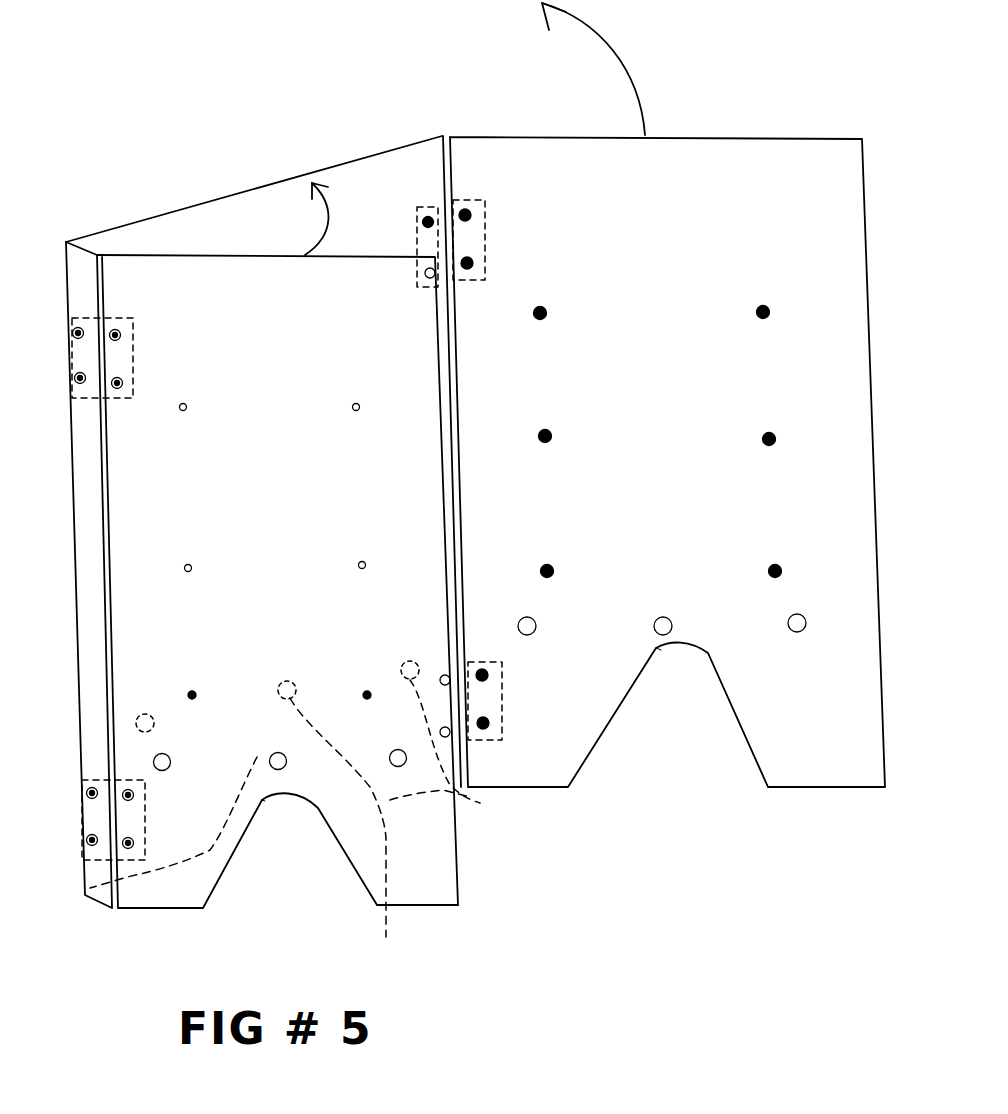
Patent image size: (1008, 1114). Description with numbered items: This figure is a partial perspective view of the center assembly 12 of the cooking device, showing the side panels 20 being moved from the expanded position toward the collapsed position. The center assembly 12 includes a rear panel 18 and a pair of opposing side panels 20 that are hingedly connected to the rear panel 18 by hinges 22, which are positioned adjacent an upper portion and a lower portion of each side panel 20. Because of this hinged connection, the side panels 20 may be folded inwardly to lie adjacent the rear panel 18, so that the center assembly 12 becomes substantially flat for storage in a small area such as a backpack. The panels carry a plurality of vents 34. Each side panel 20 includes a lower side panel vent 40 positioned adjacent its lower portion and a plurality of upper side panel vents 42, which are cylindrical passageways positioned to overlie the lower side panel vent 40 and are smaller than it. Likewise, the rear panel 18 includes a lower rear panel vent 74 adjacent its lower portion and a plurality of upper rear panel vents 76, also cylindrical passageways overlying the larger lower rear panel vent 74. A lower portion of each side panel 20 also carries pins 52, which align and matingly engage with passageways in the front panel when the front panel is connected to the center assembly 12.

The center assembly 12 is at (780, 106).
The rear panel 18 is at (352, 167).
The side panels 20 is at (843, 778).
The hinges 22 is at (485, 236).
The vents 34 is at (706, 776).
The lower side panel vent 40 is at (707, 690).
The upper side panel vents 42 is at (536, 621).
The pins 52 is at (770, 436).
The lower rear panel vent 74 is at (280, 831).
The upper rear panel vents 76 is at (145, 713).